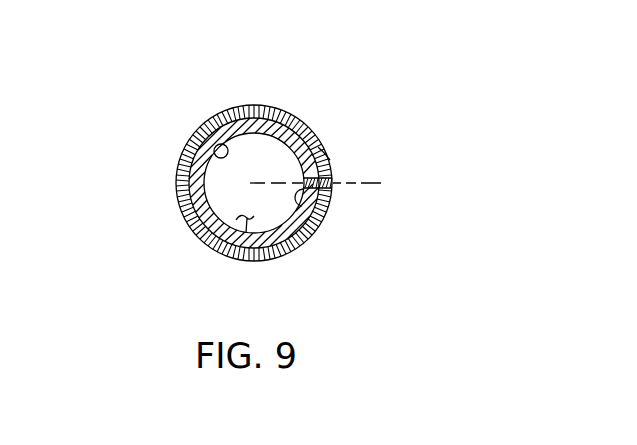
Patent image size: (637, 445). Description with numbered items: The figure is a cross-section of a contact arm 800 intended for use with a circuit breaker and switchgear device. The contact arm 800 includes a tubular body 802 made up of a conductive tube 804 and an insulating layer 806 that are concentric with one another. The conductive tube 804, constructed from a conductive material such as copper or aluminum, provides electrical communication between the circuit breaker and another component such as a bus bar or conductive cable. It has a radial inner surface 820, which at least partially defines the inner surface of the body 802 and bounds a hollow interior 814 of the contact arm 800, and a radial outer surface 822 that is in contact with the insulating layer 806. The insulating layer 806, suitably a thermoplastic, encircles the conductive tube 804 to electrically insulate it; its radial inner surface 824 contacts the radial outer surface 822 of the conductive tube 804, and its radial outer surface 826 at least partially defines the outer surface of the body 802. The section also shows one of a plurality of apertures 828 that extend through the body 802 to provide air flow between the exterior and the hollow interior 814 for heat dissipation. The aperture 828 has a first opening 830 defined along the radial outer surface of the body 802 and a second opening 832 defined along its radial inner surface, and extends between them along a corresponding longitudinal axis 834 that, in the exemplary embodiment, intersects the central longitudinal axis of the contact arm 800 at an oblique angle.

The contact arm 800 is at (444, 56).
The tubular body 802 is at (172, 184).
The conductive tube 804 is at (283, 109).
The insulating layer 806 is at (306, 126).
The hollow interior 814 is at (243, 234).
The radial inner surface 820 is at (216, 135).
The radial outer surface 822 is at (242, 104).
The radial inner surface 824 is at (205, 146).
The radial outer surface 826 is at (184, 161).
The aperture 828 is at (330, 152).
The first opening 830 is at (333, 186).
The second opening 832 is at (312, 233).
The longitudinal axis 834 is at (381, 183).